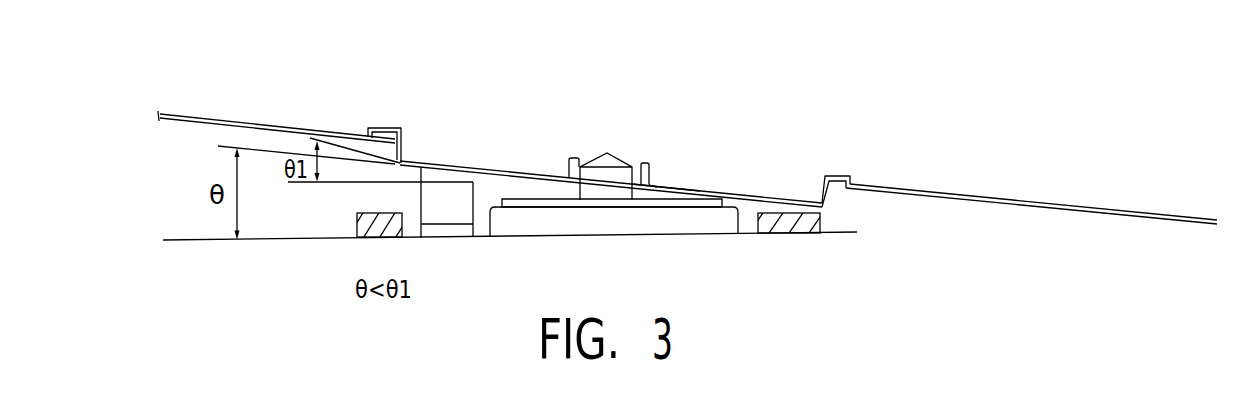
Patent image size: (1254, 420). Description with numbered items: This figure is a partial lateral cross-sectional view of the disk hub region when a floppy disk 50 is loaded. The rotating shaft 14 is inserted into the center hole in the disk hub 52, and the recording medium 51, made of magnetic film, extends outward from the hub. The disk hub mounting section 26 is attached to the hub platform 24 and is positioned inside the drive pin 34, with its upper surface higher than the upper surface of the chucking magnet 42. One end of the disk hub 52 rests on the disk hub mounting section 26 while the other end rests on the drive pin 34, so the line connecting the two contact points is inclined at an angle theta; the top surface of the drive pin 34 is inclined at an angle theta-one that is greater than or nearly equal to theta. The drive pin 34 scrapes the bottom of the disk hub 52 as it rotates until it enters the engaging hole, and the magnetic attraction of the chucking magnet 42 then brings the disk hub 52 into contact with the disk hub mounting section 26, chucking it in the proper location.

The rotating shaft 14 is at (610, 172).
The hub platform 24 is at (650, 222).
The disk hub mounting section 26 is at (528, 199).
The drive pin 34 is at (447, 207).
The chucking magnet 42 is at (797, 228).
The floppy disk 50 is at (752, 158).
The recording medium 51 is at (1031, 193).
The disk hub 52 is at (673, 188).